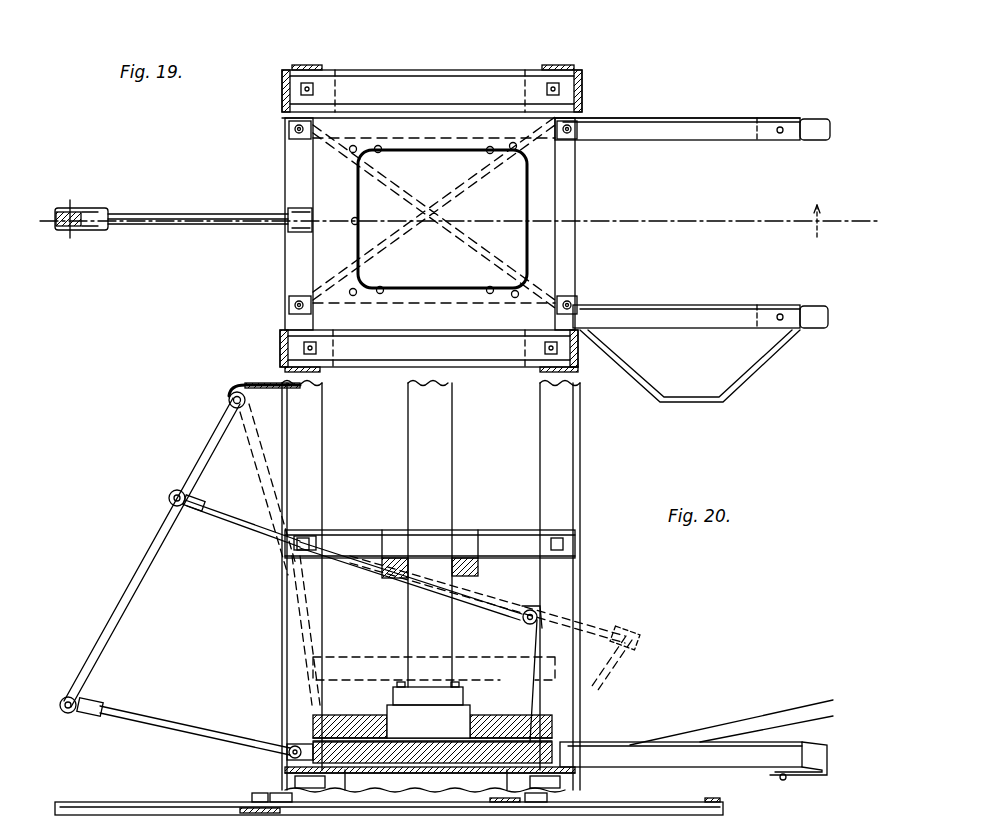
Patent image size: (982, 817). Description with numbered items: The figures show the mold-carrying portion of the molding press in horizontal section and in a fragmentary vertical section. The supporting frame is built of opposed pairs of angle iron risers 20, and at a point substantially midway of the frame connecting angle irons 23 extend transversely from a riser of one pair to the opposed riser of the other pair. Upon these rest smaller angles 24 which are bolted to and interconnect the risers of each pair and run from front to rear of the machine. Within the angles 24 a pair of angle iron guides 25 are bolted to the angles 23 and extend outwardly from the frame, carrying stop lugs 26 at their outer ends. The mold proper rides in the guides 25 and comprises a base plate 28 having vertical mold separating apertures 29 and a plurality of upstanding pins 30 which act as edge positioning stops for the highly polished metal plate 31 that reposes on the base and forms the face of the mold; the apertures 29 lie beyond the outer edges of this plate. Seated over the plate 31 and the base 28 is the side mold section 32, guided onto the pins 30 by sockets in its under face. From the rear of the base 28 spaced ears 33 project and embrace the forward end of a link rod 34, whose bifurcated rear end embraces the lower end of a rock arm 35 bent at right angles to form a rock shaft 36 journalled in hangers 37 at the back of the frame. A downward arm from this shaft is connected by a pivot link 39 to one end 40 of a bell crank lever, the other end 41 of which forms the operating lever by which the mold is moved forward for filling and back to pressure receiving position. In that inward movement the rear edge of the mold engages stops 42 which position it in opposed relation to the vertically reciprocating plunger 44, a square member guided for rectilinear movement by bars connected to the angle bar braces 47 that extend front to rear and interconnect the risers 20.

In FIG. 19, the angle iron risers 20 is at (296, 66).
In FIG. 20, the angle iron risers 20 is at (240, 805).
In FIG. 19, the connecting angle irons 23 is at (574, 226).
In FIG. 20, the connecting angle irons 23 is at (290, 772).
In FIG. 19, the smaller angles 24 is at (440, 80).
In FIG. 19, the angle iron guides 25 is at (692, 126).
In FIG. 20, the angle iron guides 25 is at (752, 758).
In FIG. 19, the stop lugs 26 is at (815, 118).
In FIG. 20, the base plate 28 is at (312, 745).
In FIG. 19, the mold separating apertures 29 is at (353, 156).
In FIG. 19, the upstanding pins 30 is at (490, 148).
In FIG. 19, the highly polished metal plate 31 is at (442, 219).
In FIG. 20, the highly polished metal plate 31 is at (440, 710).
In FIG. 20, the side mold sections 32 is at (548, 733).
In FIG. 19, the spaced ears 33 is at (292, 210).
In FIG. 20, the spaced ears 33 is at (288, 748).
In FIG. 19, the link rod 34 is at (190, 224).
In FIG. 20, the link rod 34 is at (160, 718).
In FIG. 19, the rock arm 35 is at (80, 218).
In FIG. 20, the rock arm 35 is at (140, 590).
In FIG. 20, the rock shaft 36 is at (229, 398).
In FIG. 20, the hangers 37 is at (232, 412).
In FIG. 20, the pivot link 39 is at (242, 520).
In FIG. 20, the end of bell crank lever 40 is at (522, 625).
In FIG. 20, the operating lever 41 is at (750, 718).
In FIG. 19, the stops 42 is at (288, 132).
In FIG. 20, the stops 42 is at (288, 758).
In FIG. 20, the vertically reciprocating plunger 44 is at (452, 512).
In FIG. 20, the angle bar braces 47 is at (500, 540).